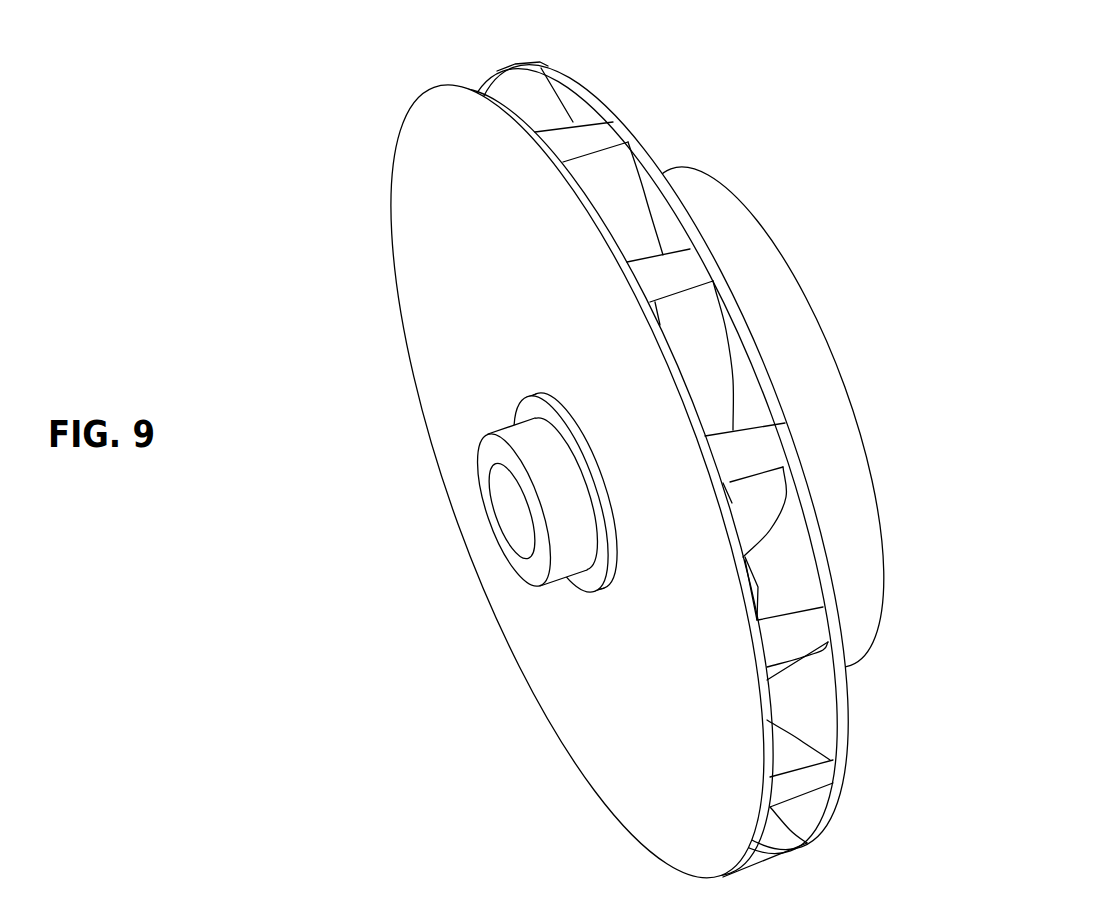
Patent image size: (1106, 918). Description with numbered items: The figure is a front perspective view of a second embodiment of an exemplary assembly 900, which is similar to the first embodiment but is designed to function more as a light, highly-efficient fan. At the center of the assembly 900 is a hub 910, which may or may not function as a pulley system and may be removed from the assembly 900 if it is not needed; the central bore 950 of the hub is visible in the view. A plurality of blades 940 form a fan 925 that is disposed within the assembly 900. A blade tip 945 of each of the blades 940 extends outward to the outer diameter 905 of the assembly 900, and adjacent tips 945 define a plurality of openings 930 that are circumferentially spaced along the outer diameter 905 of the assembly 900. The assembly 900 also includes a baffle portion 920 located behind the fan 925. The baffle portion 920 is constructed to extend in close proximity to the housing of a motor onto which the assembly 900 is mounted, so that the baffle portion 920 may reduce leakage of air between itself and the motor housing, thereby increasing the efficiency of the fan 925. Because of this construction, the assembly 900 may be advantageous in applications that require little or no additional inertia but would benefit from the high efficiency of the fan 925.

The assembly 900 is at (938, 208).
The outer diameter 905 is at (546, 64).
The hub 910 is at (522, 440).
The baffle portion 920 is at (770, 297).
The fan 925 is at (418, 72).
The openings 930 is at (793, 570).
The blades 940 is at (770, 492).
The blade tip 945 is at (760, 440).
The bore 950 is at (512, 513).